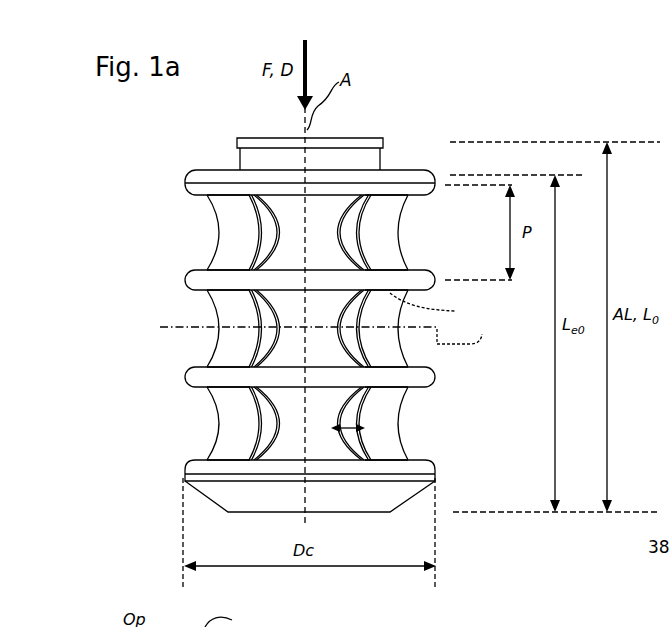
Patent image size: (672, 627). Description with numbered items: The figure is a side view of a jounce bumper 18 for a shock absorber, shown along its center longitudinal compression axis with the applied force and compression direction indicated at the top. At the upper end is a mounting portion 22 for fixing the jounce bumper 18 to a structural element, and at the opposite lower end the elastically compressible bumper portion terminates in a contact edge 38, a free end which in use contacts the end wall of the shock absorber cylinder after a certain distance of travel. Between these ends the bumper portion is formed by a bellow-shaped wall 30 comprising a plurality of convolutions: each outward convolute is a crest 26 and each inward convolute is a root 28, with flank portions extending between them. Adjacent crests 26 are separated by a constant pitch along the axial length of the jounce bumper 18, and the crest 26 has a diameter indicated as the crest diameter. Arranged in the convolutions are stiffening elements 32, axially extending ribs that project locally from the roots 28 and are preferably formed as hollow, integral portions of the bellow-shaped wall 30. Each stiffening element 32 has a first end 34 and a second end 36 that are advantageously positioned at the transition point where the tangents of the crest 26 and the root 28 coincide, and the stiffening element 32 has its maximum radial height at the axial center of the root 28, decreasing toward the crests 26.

The jounce bumper 18 is at (122, 443).
The mounting portion 22 is at (383, 139).
The crest 26 is at (185, 281).
The root 28 is at (292, 246).
The bellow-shaped wall 30 is at (284, 354).
The stiffening elements 32 is at (217, 327).
The first end 34 is at (392, 388).
The second end 36 is at (392, 458).
The contact edge 38 is at (252, 510).